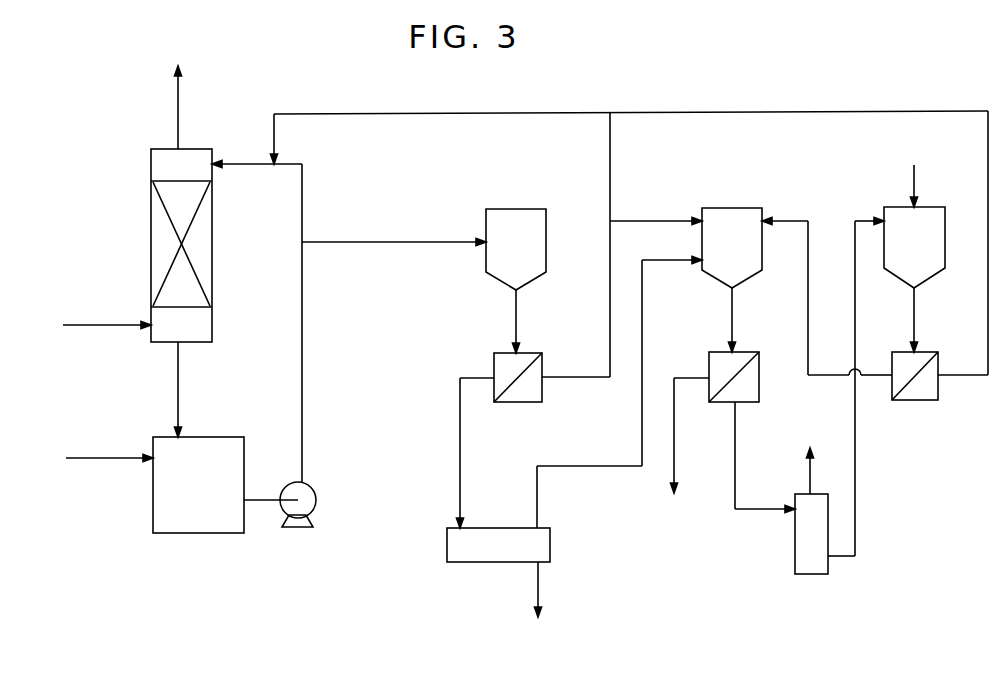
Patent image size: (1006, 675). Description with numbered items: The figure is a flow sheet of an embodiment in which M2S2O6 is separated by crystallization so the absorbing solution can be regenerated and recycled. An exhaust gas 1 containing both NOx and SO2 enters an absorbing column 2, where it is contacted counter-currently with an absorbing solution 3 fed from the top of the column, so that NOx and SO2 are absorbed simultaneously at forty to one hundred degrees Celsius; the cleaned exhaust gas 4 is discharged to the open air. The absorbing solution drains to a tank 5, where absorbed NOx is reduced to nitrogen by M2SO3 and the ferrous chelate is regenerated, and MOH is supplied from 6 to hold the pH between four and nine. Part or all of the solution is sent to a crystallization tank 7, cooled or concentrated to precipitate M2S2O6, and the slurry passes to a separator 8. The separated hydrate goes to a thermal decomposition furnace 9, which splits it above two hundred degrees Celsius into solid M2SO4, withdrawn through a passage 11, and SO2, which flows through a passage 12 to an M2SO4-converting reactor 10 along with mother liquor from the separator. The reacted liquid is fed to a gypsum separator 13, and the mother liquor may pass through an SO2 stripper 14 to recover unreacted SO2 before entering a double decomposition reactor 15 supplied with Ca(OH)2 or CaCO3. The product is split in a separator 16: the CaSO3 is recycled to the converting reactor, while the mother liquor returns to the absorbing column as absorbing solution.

The exhaust gas 1 is at (106, 340).
The absorbing column 2 is at (195, 245).
The absorbing solution 3 is at (600, 296).
The exhaust gas 4 is at (188, 104).
The tank 5 is at (234, 437).
The MOH supply 6 is at (107, 457).
The crystallization tank 7 is at (424, 249).
The separator 8 is at (598, 274).
The thermal decomposition furnace 9 is at (498, 470).
The M2SO4-converting reactor 10 is at (797, 291).
The passage 11 is at (532, 606).
The passage 12 is at (619, 393).
The gypsum separator 13 is at (717, 407).
The SO2 stripper 14 is at (809, 396).
The double decomposition reactor 15 is at (920, 201).
The separator 16 is at (915, 358).